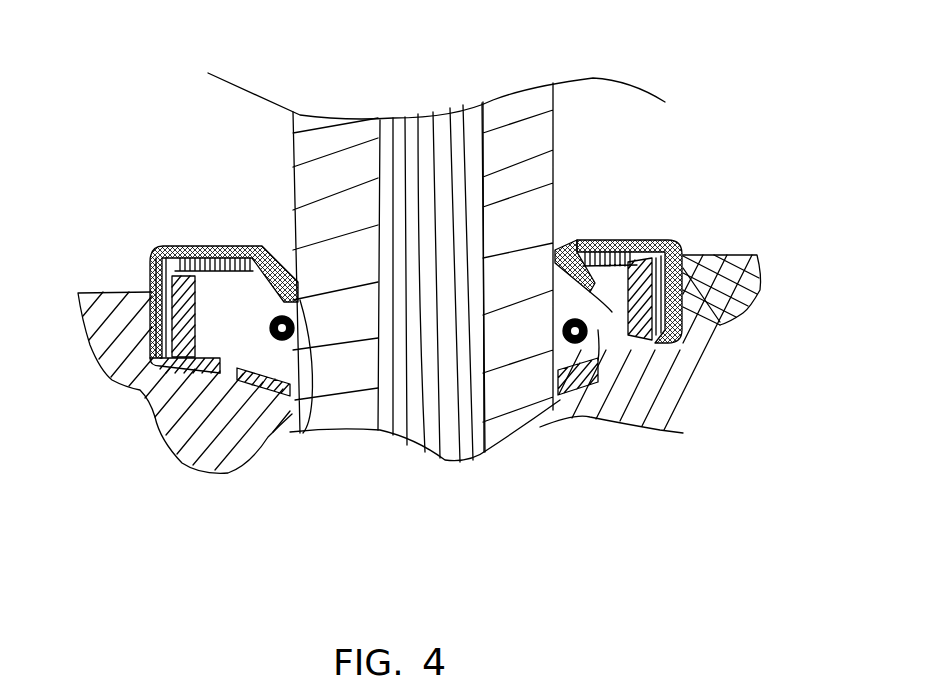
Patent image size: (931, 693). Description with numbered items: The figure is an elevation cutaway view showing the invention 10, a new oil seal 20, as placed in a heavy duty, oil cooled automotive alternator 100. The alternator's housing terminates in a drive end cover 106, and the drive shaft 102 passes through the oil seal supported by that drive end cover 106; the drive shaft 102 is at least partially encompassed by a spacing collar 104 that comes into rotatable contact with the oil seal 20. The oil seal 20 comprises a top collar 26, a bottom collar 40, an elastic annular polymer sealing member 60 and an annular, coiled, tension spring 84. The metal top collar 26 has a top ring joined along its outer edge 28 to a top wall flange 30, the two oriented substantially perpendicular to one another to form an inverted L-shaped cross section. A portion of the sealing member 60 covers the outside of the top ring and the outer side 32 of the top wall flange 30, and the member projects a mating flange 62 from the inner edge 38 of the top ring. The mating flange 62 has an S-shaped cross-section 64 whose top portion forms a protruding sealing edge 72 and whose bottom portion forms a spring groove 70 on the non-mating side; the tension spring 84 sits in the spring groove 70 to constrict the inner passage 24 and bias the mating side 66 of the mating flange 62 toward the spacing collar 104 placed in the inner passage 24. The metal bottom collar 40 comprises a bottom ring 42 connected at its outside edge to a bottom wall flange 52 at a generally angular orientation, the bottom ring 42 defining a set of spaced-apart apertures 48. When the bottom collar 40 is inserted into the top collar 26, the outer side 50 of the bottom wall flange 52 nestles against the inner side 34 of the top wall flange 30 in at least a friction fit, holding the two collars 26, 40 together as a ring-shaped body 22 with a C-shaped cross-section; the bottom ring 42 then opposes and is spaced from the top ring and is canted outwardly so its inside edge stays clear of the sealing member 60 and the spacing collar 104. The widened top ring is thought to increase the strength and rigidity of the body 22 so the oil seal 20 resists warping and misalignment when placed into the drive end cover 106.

The invention 10 is at (647, 208).
The oil seal 20 is at (218, 212).
The body 22 is at (232, 156).
The inner passage 24 is at (278, 226).
The top collar 26 is at (230, 265).
The outer edge 28 is at (150, 263).
The top wall flange 30 is at (787, 420).
The outer side 32 is at (88, 340).
The inner side 34 is at (150, 392).
The inner edge 38 is at (260, 238).
The bottom collar 40 is at (200, 440).
The bottom ring 42 is at (230, 440).
The apertures 48 is at (197, 405).
The outer side 50 is at (760, 290).
The bottom wall flange 52 is at (88, 310).
The elastic annular polymer sealing member 60 is at (176, 245).
The mating flange 62 is at (295, 328).
The S-shaped cross-section 64 is at (250, 300).
The mating side 66 is at (272, 320).
The spring groove 70 is at (300, 433).
The protruding sealing edge 72 is at (285, 262).
The annular coiled tension spring 84 is at (272, 438).
The alternator 100 is at (737, 206).
The drive shaft 102 is at (427, 133).
The spacing collar 104 is at (545, 147).
The drive end cover 106 is at (113, 290).